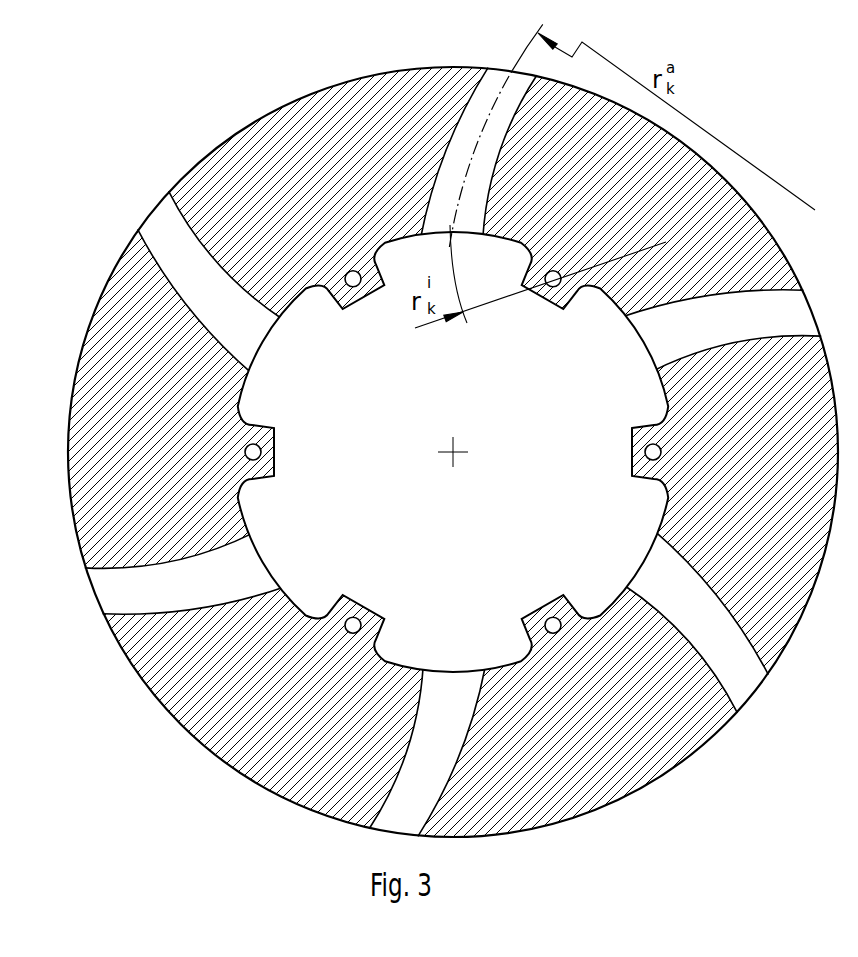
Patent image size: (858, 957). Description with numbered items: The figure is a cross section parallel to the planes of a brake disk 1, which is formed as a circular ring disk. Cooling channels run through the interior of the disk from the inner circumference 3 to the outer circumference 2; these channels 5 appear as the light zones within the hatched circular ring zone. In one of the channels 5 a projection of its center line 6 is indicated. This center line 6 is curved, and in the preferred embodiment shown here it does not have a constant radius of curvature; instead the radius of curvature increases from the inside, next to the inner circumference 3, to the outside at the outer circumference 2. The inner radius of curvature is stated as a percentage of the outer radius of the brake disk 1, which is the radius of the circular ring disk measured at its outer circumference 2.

The brake disk 1 is at (657, 121).
The outer circumference 2 is at (253, 120).
The inner circumference 3 is at (602, 302).
The channels 5 is at (462, 143).
The center line 6 is at (488, 67).